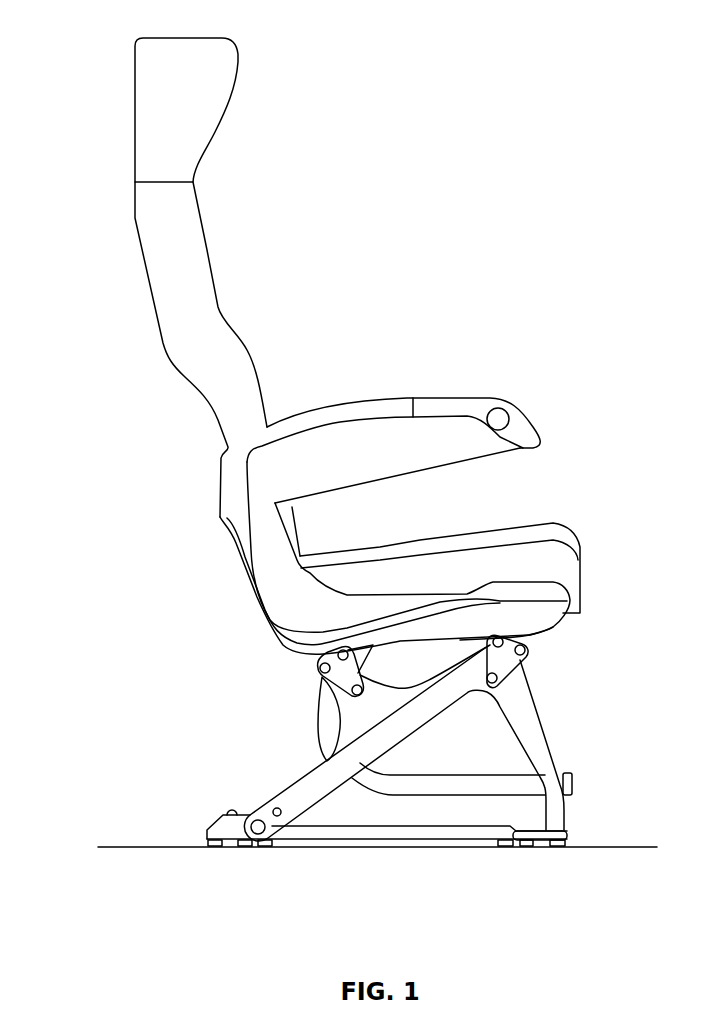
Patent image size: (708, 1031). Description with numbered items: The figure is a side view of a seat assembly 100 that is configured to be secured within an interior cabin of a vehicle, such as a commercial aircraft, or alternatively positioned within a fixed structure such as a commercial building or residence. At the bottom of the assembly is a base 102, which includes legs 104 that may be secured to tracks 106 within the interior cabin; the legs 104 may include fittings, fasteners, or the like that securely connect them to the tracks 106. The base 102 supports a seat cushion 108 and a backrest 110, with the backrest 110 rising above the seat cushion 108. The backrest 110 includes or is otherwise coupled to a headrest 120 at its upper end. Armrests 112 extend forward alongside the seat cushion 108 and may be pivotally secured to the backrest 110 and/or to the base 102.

The seat assembly 100 is at (116, 42).
The base 102 is at (327, 757).
The legs 104 is at (207, 833).
The tracks 106 is at (285, 848).
The seat cushion 108 is at (567, 523).
The backrest 110 is at (208, 250).
The armrests 112 is at (447, 398).
The headrest 120 is at (236, 78).